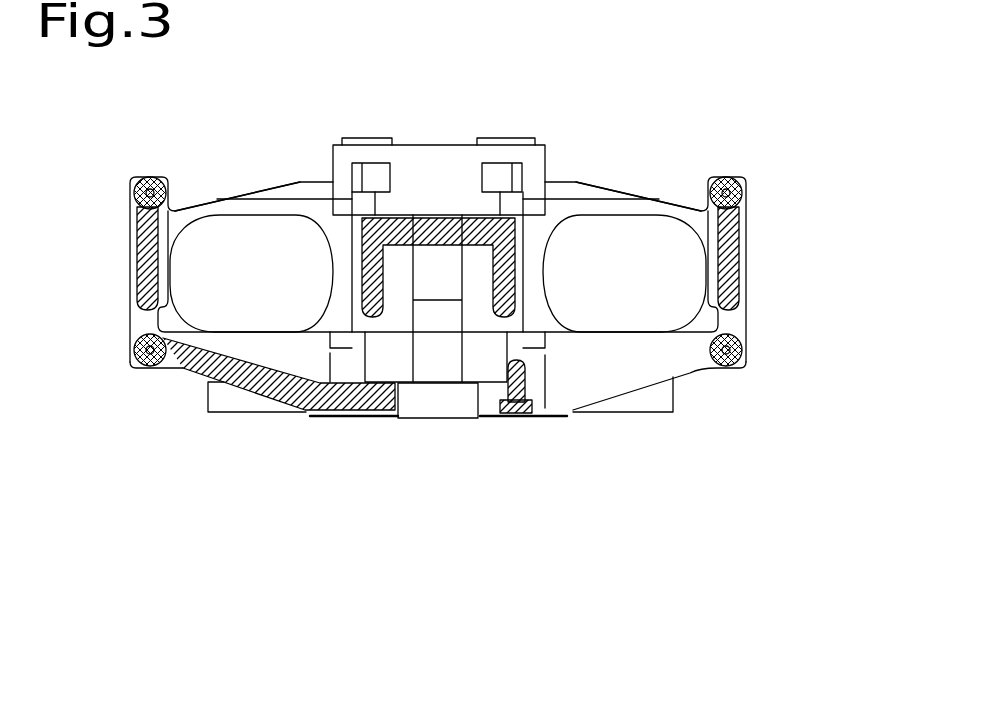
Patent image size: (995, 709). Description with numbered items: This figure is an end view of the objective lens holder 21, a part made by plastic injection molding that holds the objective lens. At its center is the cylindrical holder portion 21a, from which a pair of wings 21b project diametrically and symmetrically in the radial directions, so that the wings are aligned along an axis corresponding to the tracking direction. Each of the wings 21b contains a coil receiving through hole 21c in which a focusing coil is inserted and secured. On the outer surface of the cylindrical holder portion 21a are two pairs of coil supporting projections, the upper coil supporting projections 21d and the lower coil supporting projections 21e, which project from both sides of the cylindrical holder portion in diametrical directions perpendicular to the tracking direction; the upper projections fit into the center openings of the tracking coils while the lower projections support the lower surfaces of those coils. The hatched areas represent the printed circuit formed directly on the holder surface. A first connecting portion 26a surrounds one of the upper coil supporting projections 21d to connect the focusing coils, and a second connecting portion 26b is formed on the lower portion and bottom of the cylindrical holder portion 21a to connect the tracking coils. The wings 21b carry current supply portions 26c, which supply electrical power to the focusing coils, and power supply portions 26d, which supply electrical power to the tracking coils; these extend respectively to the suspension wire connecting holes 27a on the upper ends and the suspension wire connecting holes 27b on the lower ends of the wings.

The objective lens holder 21 is at (628, 100).
The cylindrical holder portion 21a is at (510, 147).
The wings 21b is at (220, 207).
The coil receiving through holes 21c is at (178, 290).
The upper coil supporting projections 21d is at (437, 283).
The lower coil supporting projections 21e is at (453, 407).
The first connecting portion 26a is at (452, 217).
The second connecting portion 26b is at (522, 390).
The current supply portions 26c is at (140, 237).
The power supply portions 26d is at (252, 377).
The suspension wire connecting holes 27a is at (137, 177).
The suspension wire connecting holes 27b is at (137, 365).